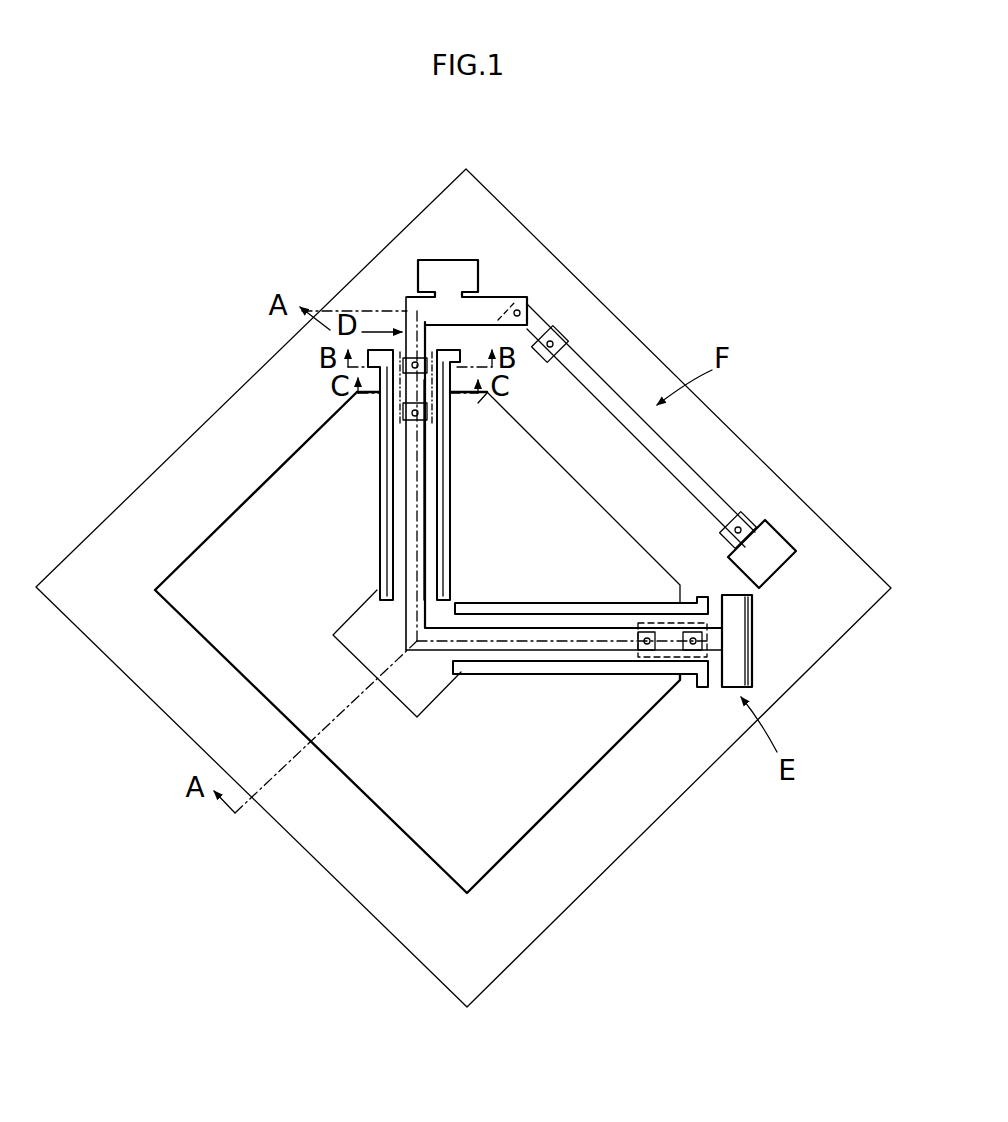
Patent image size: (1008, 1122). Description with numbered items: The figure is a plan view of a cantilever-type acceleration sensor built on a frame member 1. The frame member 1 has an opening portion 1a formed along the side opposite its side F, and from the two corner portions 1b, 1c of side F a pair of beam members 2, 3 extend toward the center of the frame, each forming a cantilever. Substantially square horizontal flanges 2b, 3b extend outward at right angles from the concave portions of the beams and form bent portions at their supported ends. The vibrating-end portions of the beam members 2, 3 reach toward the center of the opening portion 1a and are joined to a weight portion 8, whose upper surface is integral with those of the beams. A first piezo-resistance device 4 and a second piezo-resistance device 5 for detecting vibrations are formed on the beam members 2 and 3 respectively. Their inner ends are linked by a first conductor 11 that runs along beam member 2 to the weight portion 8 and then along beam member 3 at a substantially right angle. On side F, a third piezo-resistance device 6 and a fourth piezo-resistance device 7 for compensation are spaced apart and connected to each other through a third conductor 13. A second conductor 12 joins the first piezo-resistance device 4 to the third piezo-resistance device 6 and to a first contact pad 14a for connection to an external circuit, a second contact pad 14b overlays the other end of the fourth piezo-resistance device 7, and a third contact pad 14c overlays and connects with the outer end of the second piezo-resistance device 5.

The frame member 1 is at (596, 882).
The opening portion 1a is at (457, 826).
The corner portion 1b is at (478, 403).
The corner portion 1c is at (675, 591).
The beam member 2 is at (440, 505).
The horizontal flange 2b is at (391, 546).
The beam member 3 is at (557, 652).
The horizontal flange 3b is at (571, 604).
The first piezo-resistance device 4 is at (403, 393).
The second piezo-resistance device 5 is at (657, 656).
The third piezo-resistance device 6 is at (545, 325).
The fourth piezo-resistance device 7 is at (727, 512).
The weight portion 8 is at (438, 702).
The first conductor 11 is at (413, 500).
The second conductor 12 is at (417, 306).
The third conductor 13 is at (658, 447).
The first contact pad 14a is at (455, 275).
The second contact pad 14b is at (778, 545).
The third contact pad 14c is at (746, 652).